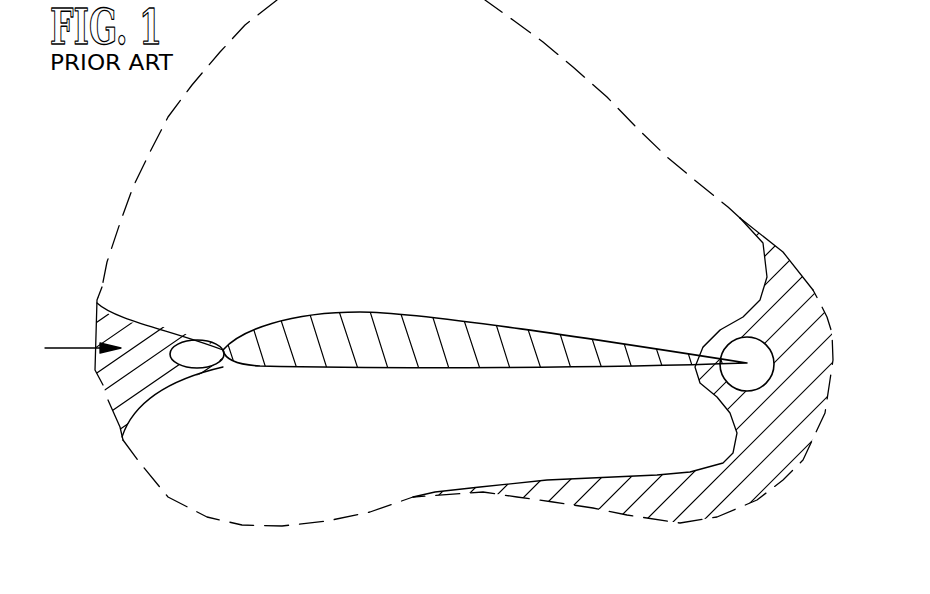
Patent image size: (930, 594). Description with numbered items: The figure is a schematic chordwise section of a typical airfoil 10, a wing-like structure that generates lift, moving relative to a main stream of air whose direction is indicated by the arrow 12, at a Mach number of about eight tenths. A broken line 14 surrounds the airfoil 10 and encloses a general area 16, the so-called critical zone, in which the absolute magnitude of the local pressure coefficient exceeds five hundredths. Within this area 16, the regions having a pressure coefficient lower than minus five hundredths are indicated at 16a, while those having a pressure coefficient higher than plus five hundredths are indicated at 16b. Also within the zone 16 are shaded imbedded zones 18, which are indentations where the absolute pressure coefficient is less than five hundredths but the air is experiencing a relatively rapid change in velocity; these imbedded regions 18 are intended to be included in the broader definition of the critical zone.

The airfoil 10 is at (552, 335).
The arrow 12 is at (55, 348).
The broken line 14 is at (600, 87).
The general area 16 is at (542, 235).
The areas with pressure coefficient lower than minus 0.05 16a is at (405, 141).
The areas with pressure coefficient higher than plus 0.05 16b is at (190, 348).
The imbedded zones 18 is at (117, 383).